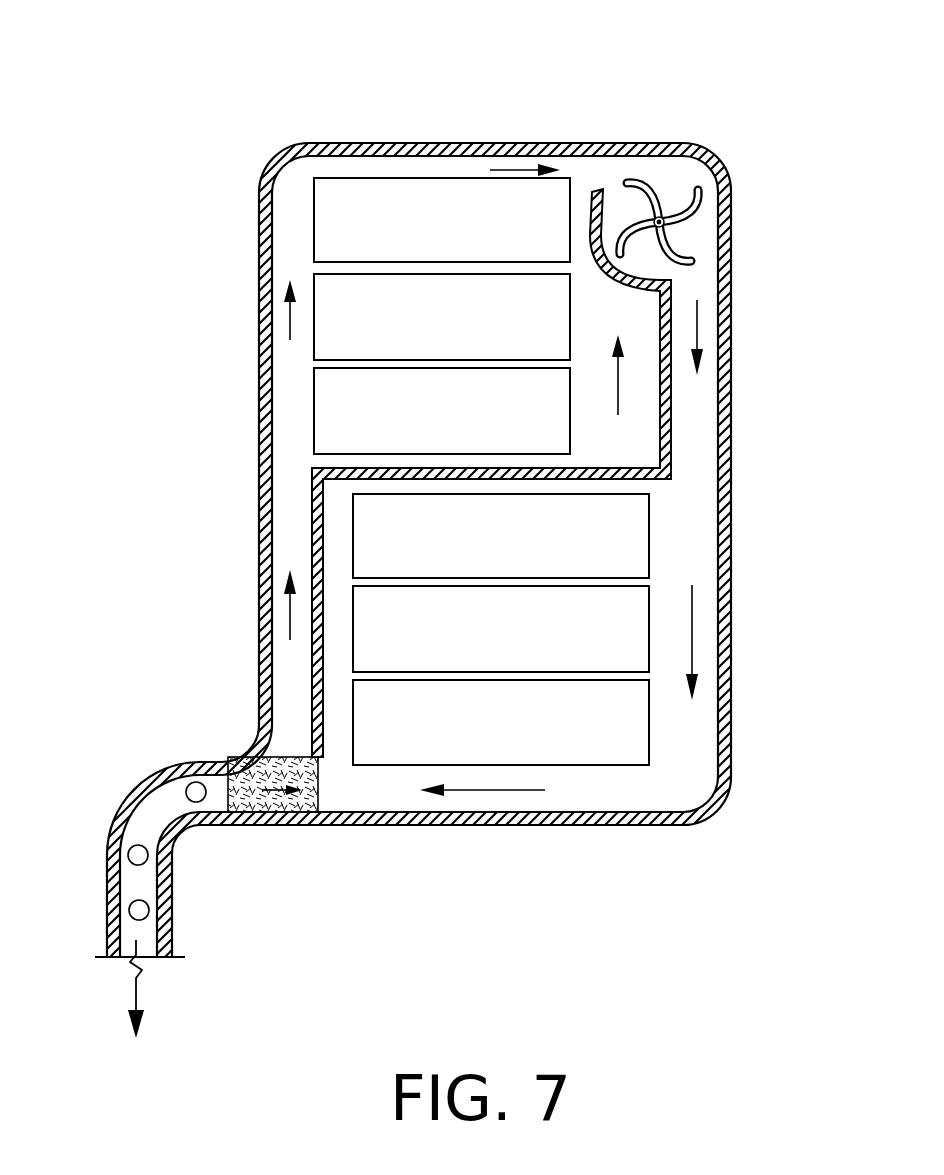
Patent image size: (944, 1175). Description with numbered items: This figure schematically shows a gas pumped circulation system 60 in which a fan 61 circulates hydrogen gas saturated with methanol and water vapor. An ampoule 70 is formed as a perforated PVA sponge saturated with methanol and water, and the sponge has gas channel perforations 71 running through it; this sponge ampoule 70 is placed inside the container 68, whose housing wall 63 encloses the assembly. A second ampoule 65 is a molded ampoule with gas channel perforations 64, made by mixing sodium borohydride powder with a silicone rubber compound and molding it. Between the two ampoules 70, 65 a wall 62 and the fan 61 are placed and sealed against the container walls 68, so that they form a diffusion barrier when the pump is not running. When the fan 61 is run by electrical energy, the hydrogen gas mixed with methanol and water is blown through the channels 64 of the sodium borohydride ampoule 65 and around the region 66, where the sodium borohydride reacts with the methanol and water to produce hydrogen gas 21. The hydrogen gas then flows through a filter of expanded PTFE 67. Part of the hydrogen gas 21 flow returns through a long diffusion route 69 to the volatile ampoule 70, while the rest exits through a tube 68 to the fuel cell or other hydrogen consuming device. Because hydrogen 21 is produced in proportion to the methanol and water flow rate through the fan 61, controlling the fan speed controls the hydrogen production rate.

The hydrogen gas 21 is at (228, 1074).
The hydrogen generator 60 is at (423, 170).
The fan 61 is at (693, 212).
The wall 62 is at (671, 442).
The housing wall 63 is at (731, 520).
The gas channel perforations 64 is at (649, 578).
The second ampoule 65 is at (646, 714).
The around region 66 is at (645, 797).
The filter of expanded PTFE 67 is at (316, 802).
The container 68 is at (135, 795).
The long diffusion route 69 is at (297, 505).
The ampoule 70 is at (318, 392).
The gas channel perforations 71 is at (318, 265).